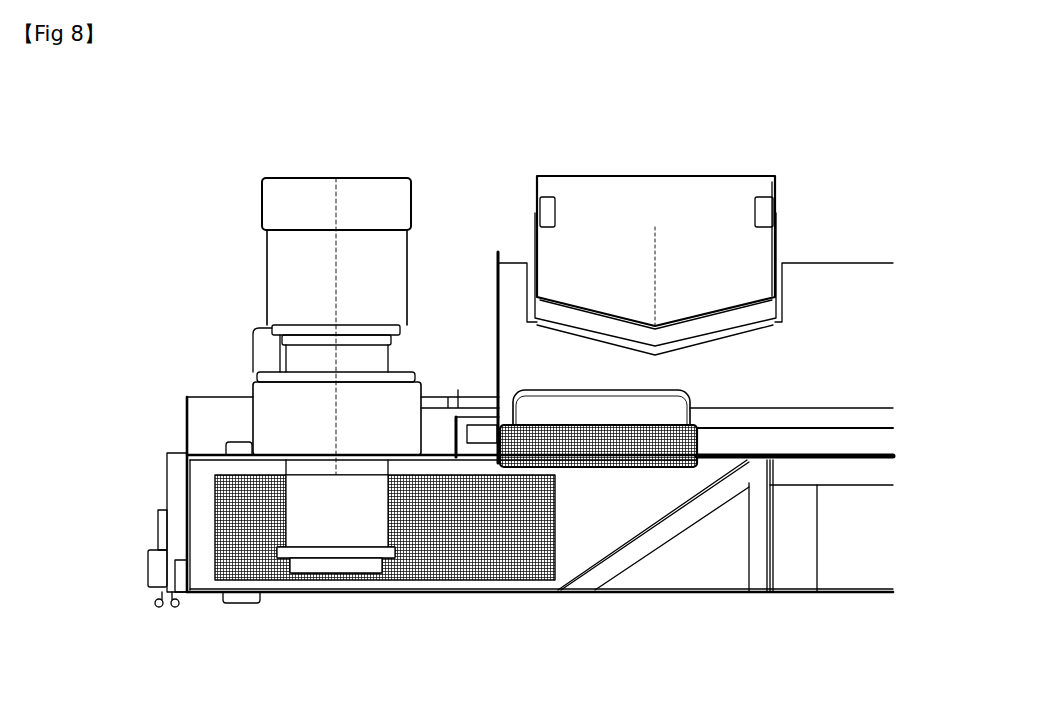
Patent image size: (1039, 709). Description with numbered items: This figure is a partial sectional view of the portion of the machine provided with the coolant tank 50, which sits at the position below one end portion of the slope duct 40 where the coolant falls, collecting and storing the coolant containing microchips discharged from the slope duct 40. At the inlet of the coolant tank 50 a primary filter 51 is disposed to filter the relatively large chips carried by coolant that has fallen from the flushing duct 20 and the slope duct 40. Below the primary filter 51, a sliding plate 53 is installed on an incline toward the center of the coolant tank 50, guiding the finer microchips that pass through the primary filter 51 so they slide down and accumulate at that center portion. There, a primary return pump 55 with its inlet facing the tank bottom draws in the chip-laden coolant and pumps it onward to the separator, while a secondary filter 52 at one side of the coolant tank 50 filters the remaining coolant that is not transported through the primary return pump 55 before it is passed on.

The flushing duct 20 is at (642, 205).
The slope duct 40 is at (823, 428).
The coolant tank 50 is at (202, 513).
The primary filter 51 is at (513, 420).
The secondary filter 52 is at (497, 558).
The sliding plate 53 is at (602, 562).
The primary return pump 55 is at (301, 200).